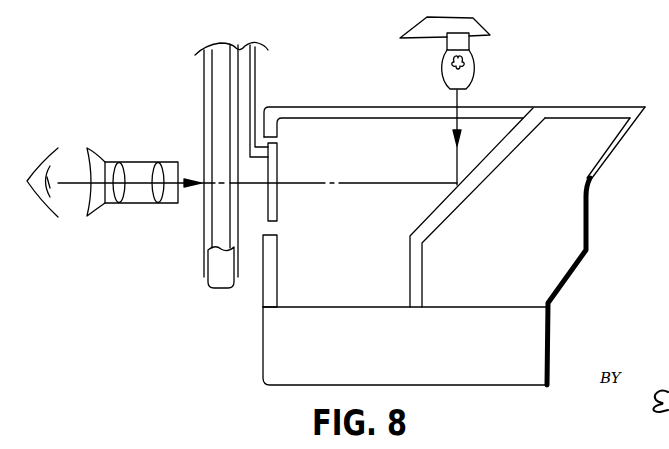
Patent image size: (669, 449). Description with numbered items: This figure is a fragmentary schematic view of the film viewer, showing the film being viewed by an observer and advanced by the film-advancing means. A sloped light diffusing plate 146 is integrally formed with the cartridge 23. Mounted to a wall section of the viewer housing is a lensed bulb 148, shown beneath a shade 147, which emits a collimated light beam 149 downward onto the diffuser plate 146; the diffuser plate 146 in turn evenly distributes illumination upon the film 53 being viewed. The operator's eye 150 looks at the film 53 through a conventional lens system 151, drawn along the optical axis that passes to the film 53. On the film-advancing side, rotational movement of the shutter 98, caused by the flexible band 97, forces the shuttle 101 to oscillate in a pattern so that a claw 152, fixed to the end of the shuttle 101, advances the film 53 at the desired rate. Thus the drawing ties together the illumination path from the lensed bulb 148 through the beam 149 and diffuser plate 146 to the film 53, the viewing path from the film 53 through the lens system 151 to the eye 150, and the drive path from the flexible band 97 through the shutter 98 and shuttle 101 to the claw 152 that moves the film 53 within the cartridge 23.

The cartridge 23 is at (405, 346).
The film 53 is at (274, 208).
The flexible band 97 is at (220, 279).
The shutter 98 is at (204, 92).
The shuttle 101 is at (255, 84).
The sloped light diffusing plate 146 is at (503, 128).
The lamp shade 147 is at (476, 20).
The lensed bulb 148 is at (476, 68).
The collimated light beam 149 is at (440, 90).
The eye 150 is at (50, 166).
The lens system 151 is at (137, 170).
The claw 152 is at (278, 154).